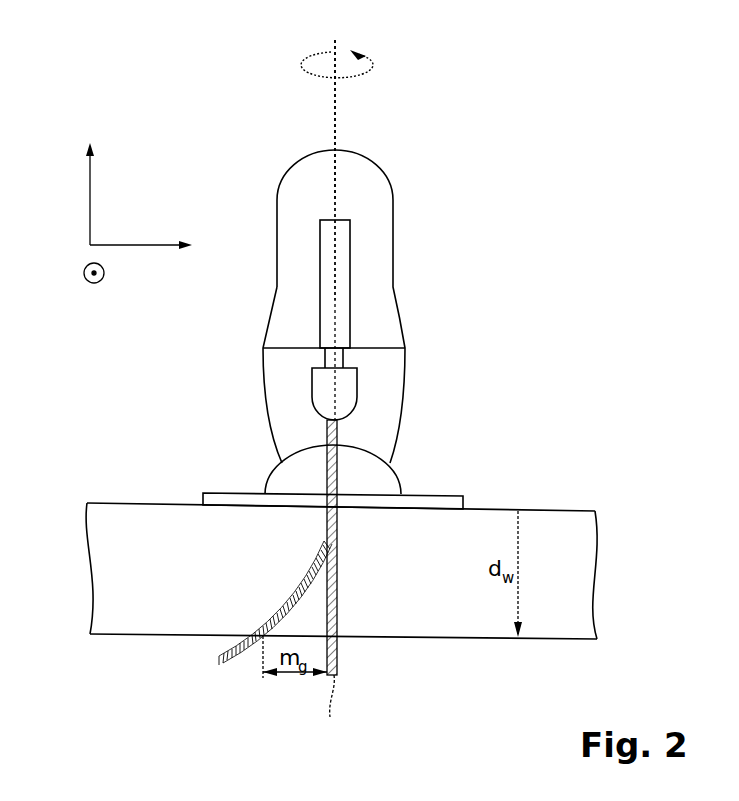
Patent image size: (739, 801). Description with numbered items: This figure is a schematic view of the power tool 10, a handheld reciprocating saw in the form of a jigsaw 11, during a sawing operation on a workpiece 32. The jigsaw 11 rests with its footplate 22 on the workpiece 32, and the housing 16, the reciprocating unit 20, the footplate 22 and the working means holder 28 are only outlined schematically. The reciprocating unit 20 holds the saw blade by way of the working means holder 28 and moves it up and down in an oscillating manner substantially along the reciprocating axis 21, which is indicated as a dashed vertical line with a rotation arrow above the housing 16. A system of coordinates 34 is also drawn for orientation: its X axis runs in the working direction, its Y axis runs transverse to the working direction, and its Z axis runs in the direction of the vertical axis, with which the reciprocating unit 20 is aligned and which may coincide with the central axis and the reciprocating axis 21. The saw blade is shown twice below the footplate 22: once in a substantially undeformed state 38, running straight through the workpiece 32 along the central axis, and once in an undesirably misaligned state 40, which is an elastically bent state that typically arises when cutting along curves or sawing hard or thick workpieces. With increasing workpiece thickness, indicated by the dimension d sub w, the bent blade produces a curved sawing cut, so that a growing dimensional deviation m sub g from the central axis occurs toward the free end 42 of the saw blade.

The power tool 10 is at (469, 72).
The jigsaw 11 is at (474, 68).
The housing 16 is at (277, 196).
The reciprocating unit 20 is at (350, 247).
The reciprocating axis 21 is at (333, 125).
The footplate 22 is at (219, 492).
The working means holder 28 is at (322, 390).
The workpiece 32 is at (592, 538).
The system of coordinates 34 is at (88, 245).
The undeformed state 38 is at (337, 622).
The misaligned state 40 is at (258, 627).
The free end 42 is at (334, 711).